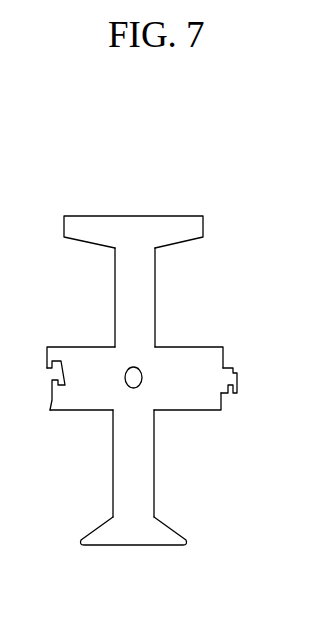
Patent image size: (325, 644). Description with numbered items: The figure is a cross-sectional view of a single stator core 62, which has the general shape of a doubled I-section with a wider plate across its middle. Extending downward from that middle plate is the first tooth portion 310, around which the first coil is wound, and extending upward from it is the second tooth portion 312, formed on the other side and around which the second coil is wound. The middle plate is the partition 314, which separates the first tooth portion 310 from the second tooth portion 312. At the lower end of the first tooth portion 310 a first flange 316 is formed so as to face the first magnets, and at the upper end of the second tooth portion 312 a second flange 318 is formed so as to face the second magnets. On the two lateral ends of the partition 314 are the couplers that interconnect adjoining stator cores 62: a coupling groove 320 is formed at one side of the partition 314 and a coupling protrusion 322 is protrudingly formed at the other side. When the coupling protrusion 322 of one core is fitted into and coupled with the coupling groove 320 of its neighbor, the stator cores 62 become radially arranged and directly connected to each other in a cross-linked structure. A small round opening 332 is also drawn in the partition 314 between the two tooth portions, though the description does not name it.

The stator core 62 is at (207, 195).
The first tooth portion 310 is at (147, 475).
The second tooth portion 312 is at (150, 279).
The partition 314 is at (88, 400).
The first flange 316 is at (152, 540).
The second flange 318 is at (146, 216).
The coupling groove 320 is at (57, 386).
The coupling protrusion 322 is at (237, 373).
The hole 332 is at (139, 381).